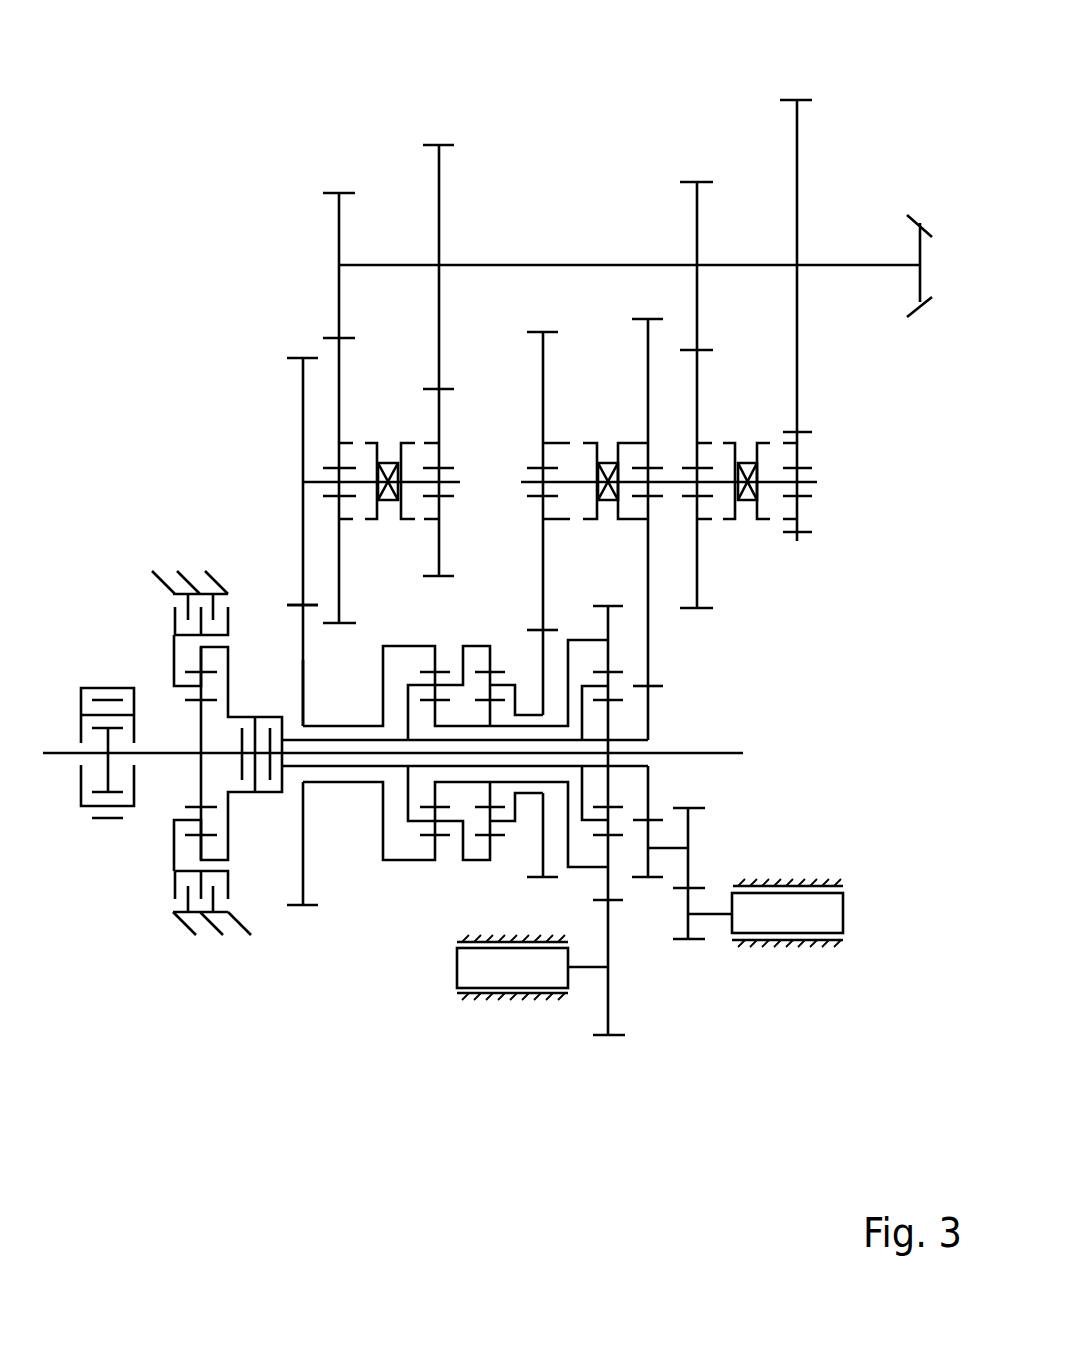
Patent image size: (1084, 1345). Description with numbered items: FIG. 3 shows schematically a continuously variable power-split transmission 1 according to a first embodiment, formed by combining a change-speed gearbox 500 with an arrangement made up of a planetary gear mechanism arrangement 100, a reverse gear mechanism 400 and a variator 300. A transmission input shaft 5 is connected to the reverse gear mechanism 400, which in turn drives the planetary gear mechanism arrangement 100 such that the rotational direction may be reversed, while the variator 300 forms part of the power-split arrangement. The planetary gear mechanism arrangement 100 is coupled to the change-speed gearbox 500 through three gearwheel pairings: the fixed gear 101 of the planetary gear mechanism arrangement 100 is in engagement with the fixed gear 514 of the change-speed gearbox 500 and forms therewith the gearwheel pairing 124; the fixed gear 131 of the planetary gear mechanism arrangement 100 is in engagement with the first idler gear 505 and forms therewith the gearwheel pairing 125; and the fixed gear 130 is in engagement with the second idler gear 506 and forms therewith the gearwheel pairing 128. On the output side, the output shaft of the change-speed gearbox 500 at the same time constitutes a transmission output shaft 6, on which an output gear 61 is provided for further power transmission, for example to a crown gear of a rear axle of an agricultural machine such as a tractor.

The continuously variable power-split transmission 1 is at (200, 145).
The transmission input shaft 5 is at (63, 756).
The transmission output shaft 6 is at (863, 265).
The output gear 61 is at (917, 245).
The planetary gear mechanism arrangement 100 is at (843, 612).
The fixed gear 101 is at (303, 662).
The gearwheel pairing 124 is at (293, 595).
The gearwheel pairing 125 is at (533, 617).
The gearwheel pairing 128 is at (657, 675).
The fixed gear 130 is at (648, 785).
The fixed gear 131 is at (543, 843).
The variator 300 is at (797, 1038).
The reverse gear mechanism 400 is at (207, 1013).
The change-speed gearbox 500 is at (755, 72).
The first idler gear 505 is at (545, 398).
The second idler gear 506 is at (648, 617).
The fixed gear 514 is at (302, 440).